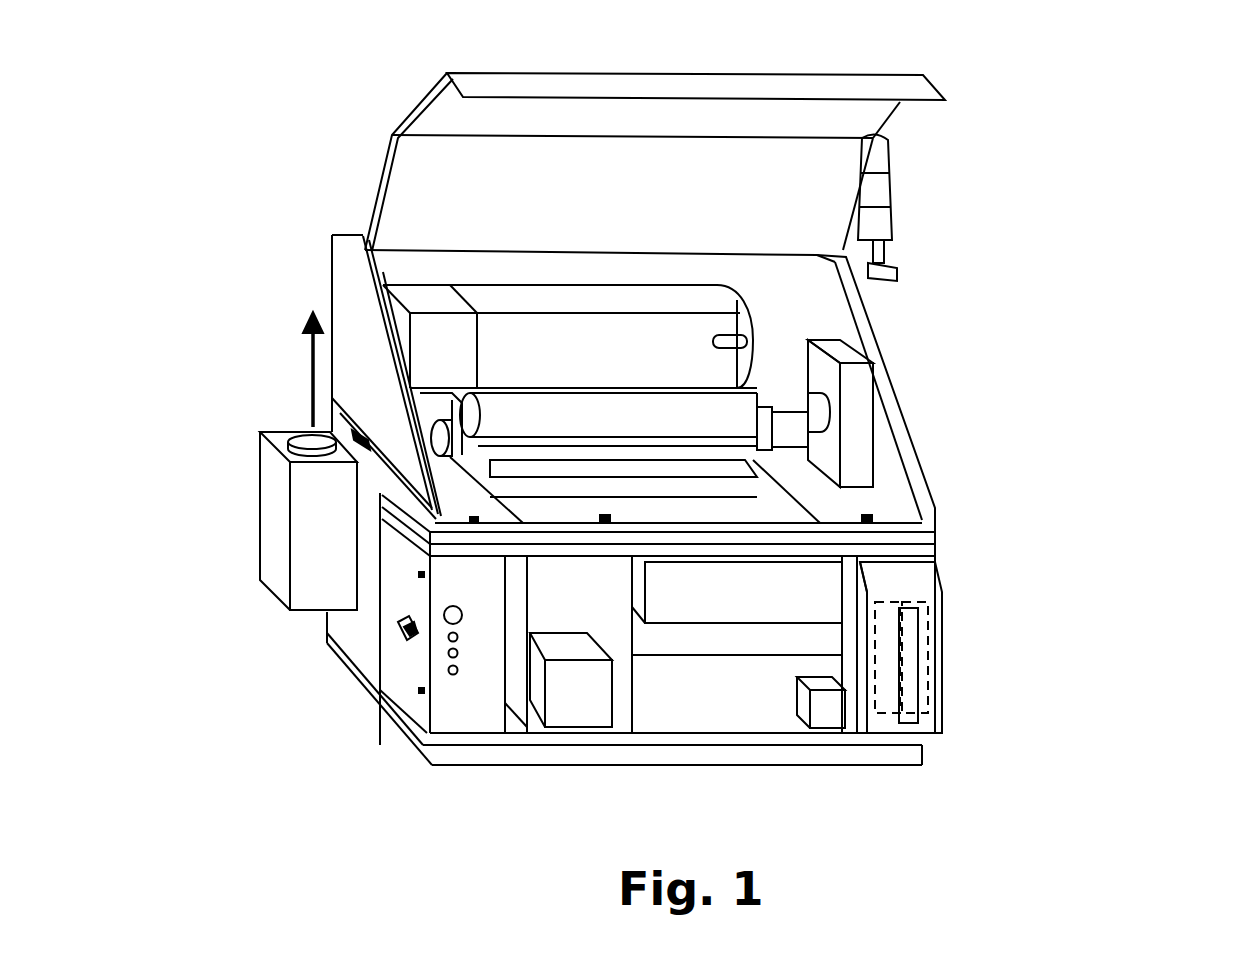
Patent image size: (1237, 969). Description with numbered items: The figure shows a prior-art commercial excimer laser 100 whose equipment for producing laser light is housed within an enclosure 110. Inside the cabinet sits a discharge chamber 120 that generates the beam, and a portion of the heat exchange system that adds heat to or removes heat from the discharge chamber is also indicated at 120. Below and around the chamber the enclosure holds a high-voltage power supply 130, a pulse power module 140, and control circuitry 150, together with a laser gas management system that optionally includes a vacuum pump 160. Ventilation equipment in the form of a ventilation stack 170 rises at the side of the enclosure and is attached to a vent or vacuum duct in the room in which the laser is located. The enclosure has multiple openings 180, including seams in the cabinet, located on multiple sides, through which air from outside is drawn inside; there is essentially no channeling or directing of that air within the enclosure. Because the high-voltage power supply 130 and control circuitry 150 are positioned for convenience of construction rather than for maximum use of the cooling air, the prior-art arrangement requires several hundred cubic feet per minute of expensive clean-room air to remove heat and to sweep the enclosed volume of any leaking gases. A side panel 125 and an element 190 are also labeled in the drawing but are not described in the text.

The excimer laser 100 is at (1110, 514).
The enclosure 110 is at (877, 338).
The discharge chamber 120 is at (497, 388).
The side panel 125 is at (365, 602).
The high-voltage power supply 130 is at (706, 602).
The pulse power module 140 is at (717, 233).
The control circuitry 150 is at (923, 640).
The vacuum pump 160 is at (575, 688).
The ventilation stack 170 is at (270, 592).
The openings 180 is at (395, 480).
The roller 190 is at (471, 262).